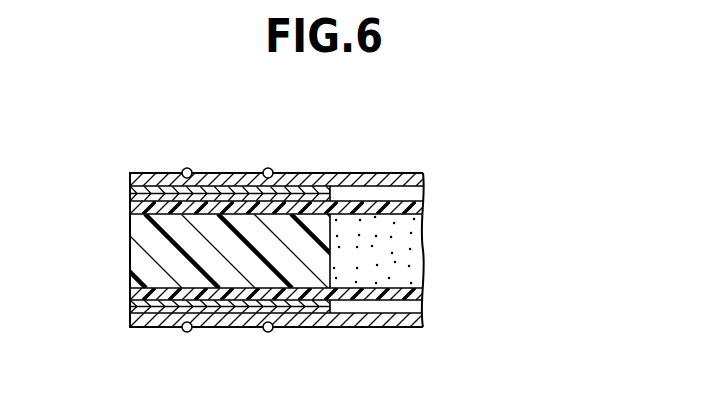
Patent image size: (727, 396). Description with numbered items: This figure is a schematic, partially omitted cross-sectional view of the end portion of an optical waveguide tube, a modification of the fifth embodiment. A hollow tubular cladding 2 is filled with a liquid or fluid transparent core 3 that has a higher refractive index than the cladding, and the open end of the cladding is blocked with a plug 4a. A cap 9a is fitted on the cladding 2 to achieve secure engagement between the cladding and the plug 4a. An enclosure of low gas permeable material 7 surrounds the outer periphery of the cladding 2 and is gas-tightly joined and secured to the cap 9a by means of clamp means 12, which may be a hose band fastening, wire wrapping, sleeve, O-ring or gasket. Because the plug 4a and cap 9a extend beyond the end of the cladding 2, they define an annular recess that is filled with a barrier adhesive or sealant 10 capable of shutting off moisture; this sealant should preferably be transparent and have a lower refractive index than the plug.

The barrier adhesive or sealant 10 is at (133, 275).
The clamp means 12 is at (188, 168).
The hollow tubular cladding 2 is at (360, 205).
The core 3 is at (400, 247).
The plug 4a is at (307, 273).
The cap 9a is at (240, 307).
The low gas permeable material layer 7 is at (396, 313).